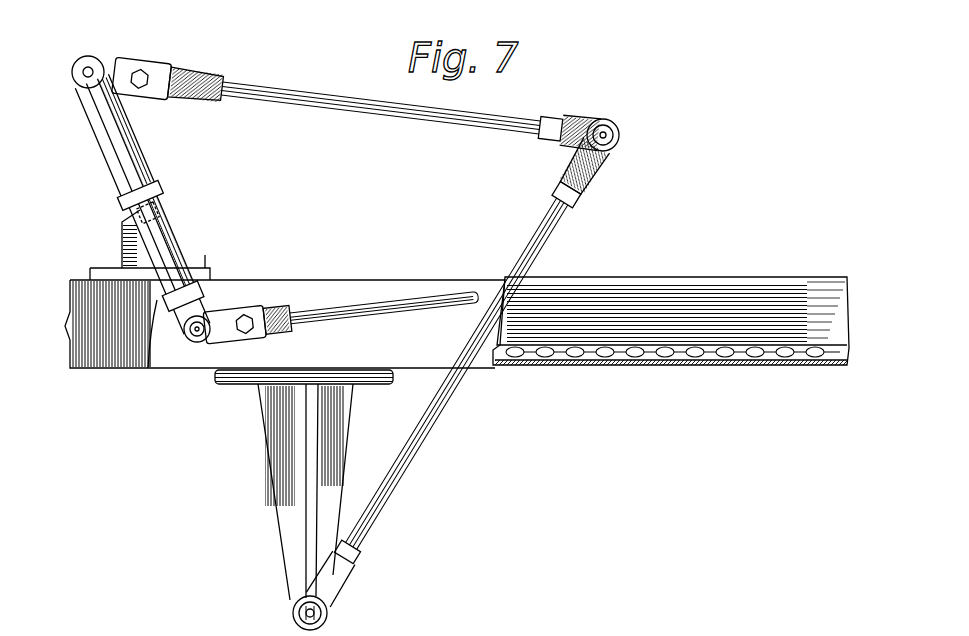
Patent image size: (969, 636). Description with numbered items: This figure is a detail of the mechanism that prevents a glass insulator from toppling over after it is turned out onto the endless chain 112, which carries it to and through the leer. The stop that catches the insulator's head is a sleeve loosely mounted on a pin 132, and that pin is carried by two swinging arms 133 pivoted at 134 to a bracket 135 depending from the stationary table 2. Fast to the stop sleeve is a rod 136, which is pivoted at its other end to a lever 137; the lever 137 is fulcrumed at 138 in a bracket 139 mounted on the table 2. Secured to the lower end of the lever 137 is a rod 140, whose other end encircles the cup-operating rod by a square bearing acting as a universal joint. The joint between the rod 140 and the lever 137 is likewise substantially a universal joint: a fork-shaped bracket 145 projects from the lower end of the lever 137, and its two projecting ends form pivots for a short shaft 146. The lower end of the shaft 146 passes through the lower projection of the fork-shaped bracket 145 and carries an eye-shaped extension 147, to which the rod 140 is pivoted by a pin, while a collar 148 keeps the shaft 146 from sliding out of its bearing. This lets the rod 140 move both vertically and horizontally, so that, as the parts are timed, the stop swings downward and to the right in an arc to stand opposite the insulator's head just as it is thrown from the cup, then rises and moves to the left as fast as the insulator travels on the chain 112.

The stationary table 2 is at (432, 362).
The endless chain 112 is at (643, 368).
The pin 132 is at (618, 128).
The swinging arms 133 is at (446, 403).
The pivot 134 is at (330, 611).
The bracket 135 is at (338, 436).
The rod 136 is at (414, 114).
The lever 137 is at (138, 163).
The fulcrum 138 is at (176, 215).
The bracket 139 is at (142, 272).
The rod 140 is at (350, 306).
The fork-shaped bracket 145 is at (190, 258).
The short shaft 146 is at (162, 196).
The eye-shaped extension 147 is at (215, 318).
The collar 148 is at (160, 340).